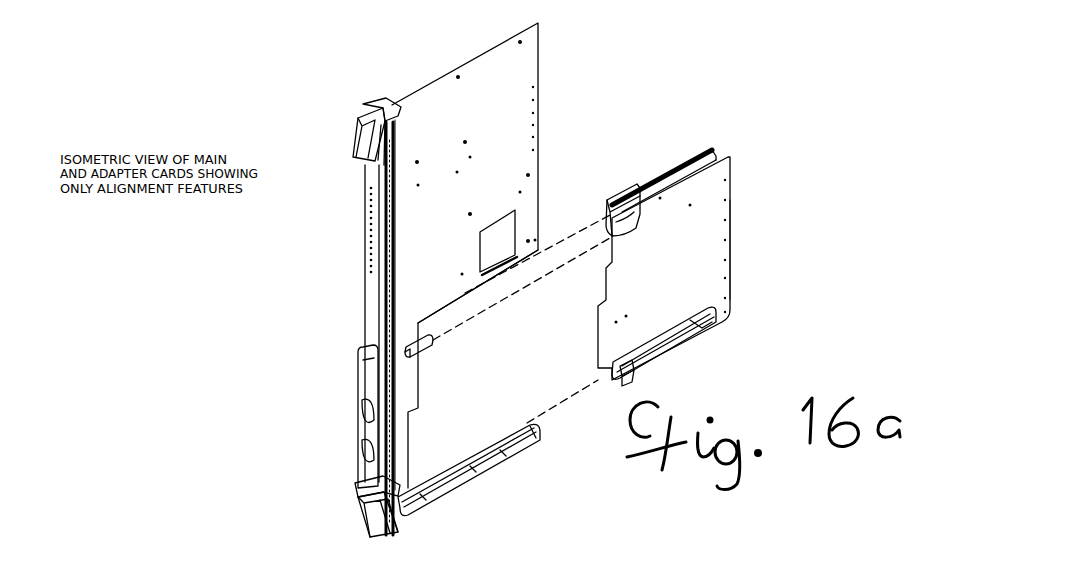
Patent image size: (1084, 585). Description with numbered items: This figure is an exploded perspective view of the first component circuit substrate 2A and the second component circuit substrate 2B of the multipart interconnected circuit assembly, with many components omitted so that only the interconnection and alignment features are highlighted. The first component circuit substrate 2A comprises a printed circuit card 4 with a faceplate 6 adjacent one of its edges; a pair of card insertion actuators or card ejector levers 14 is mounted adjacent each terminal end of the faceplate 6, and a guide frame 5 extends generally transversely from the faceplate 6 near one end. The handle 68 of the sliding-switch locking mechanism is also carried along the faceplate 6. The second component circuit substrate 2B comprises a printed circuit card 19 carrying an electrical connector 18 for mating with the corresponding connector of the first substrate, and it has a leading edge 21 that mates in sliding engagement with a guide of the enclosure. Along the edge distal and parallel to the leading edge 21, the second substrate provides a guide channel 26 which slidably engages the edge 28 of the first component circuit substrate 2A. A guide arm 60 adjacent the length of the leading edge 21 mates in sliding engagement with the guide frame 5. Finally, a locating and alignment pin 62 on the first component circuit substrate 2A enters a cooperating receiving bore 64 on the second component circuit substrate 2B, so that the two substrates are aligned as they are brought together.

The first component circuit substrate 2A is at (486, 108).
The second component circuit substrate 2B is at (695, 266).
The printed circuit card 4 is at (510, 130).
The guide frame 5 is at (490, 458).
The faceplate 6 is at (370, 288).
The lever 14 is at (362, 137).
The electrical connector 18 is at (705, 285).
The printed circuit card 19 is at (730, 208).
The leading edge 21 is at (682, 340).
The guide channel 26 is at (676, 168).
The edge 28 is at (466, 296).
The guide arm 60 is at (648, 356).
The locating and alignment pin 62 is at (434, 352).
The receiving bore 64 is at (622, 195).
The handle 68 is at (358, 376).